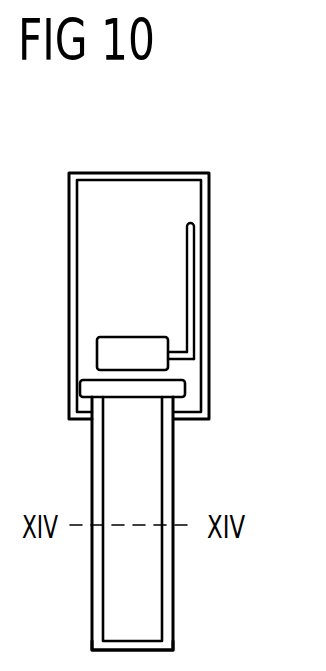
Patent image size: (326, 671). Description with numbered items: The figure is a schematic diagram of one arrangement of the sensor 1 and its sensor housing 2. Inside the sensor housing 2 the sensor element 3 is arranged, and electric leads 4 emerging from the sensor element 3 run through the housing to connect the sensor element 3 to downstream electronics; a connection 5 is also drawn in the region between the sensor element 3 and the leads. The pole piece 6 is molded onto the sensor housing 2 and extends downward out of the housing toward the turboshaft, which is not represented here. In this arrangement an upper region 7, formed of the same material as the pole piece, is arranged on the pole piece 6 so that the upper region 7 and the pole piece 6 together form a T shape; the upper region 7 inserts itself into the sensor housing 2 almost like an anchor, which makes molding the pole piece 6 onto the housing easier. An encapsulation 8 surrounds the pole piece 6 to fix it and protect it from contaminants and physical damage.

The sensor 1 is at (222, 198).
The sensor housing 2 is at (153, 173).
The sensor element 3 is at (137, 352).
The electric leads 4 is at (186, 268).
The connecting line 5 is at (170, 375).
The pole piece 6 is at (145, 473).
The upper region 7 is at (90, 387).
The encapsulation 8 is at (170, 613).